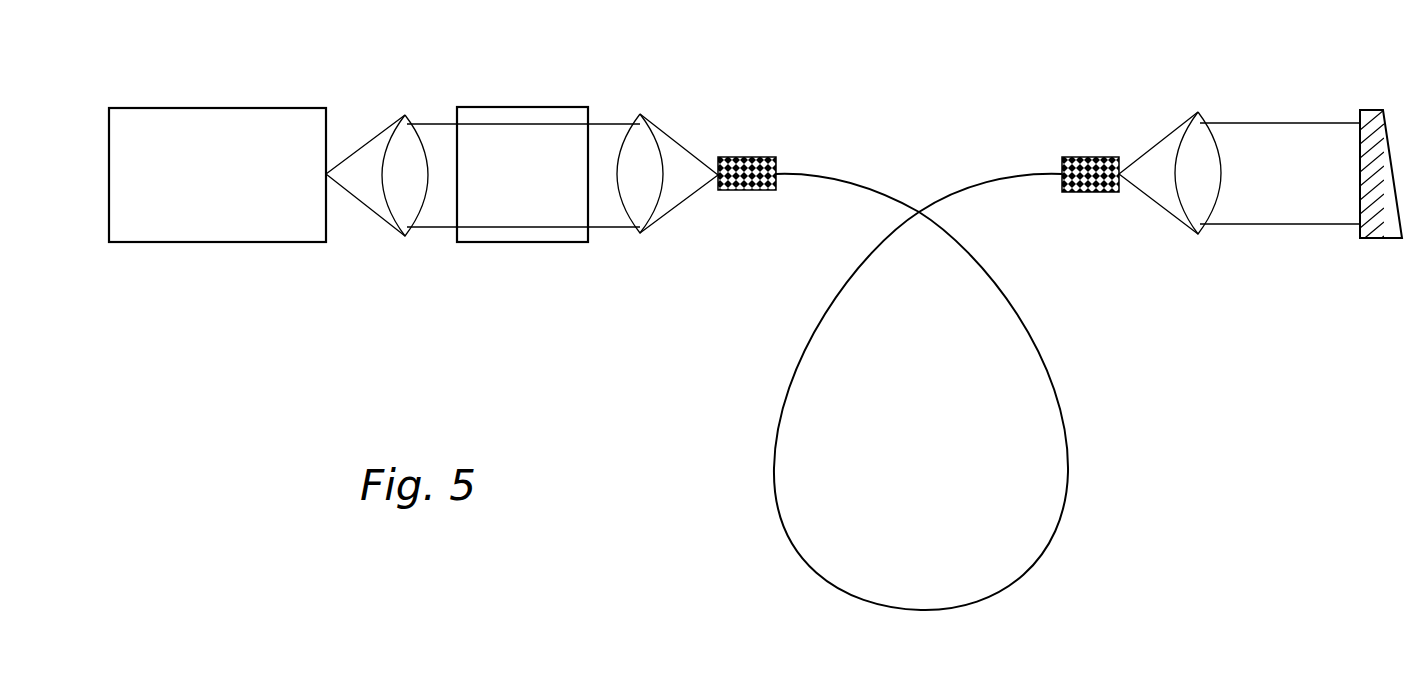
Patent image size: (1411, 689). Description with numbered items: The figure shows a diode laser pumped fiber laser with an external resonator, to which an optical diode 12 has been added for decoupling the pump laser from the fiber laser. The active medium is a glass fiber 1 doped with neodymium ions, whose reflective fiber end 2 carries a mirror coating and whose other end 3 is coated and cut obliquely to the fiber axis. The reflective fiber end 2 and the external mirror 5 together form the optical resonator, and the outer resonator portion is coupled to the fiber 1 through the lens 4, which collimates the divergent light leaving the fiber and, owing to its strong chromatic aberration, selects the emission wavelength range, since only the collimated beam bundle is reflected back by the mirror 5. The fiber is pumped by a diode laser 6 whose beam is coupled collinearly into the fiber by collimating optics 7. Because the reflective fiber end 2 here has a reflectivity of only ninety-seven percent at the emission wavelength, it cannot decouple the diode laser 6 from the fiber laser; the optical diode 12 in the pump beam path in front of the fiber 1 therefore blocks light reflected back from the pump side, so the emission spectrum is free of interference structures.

The glass fiber 1 is at (850, 266).
The reflective fiber end 2 is at (717, 157).
The other end of the glass fiber 3 is at (1120, 157).
The lens 4 is at (1198, 234).
The external mirror 5 is at (1380, 239).
The diode laser 6 is at (176, 228).
The collimating optics 7 is at (522, 166).
The optical diode 12 is at (548, 108).